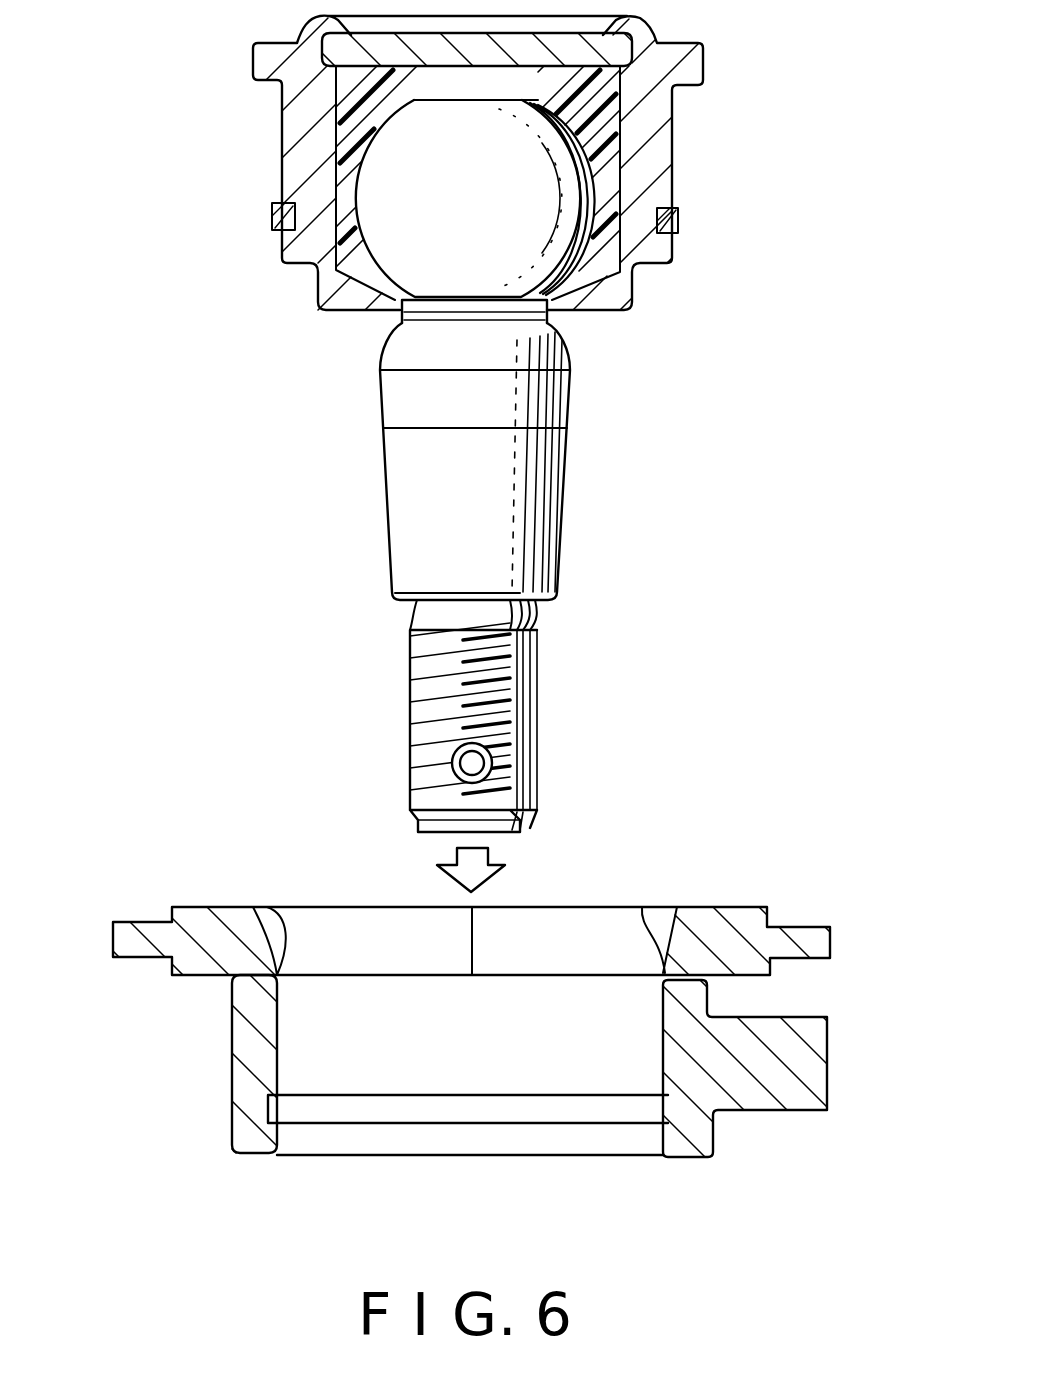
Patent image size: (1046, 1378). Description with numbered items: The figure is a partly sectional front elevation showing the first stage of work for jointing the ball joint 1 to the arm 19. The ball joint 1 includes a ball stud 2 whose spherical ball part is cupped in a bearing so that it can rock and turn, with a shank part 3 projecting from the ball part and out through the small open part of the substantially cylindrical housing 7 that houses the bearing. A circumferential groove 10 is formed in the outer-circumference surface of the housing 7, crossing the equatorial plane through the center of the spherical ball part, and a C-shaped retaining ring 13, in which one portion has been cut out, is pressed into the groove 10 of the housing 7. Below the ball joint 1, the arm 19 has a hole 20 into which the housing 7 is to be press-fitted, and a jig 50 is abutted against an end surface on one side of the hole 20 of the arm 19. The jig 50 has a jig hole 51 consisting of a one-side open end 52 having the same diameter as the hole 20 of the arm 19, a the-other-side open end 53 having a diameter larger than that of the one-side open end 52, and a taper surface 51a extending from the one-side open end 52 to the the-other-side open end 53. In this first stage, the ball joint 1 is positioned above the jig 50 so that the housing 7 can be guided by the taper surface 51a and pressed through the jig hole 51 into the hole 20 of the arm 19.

The ball joint 1 is at (543, 466).
The ball stud 2 is at (560, 550).
The shank part 3 is at (540, 705).
The housing 7 is at (673, 140).
The circumferential groove 10 is at (680, 227).
The retaining ring 13 is at (679, 214).
The arm 19 is at (462, 1075).
The hole 20 is at (283, 1012).
The jig 50 is at (471, 942).
The jig hole 51 is at (290, 907).
The taper surface 51a is at (645, 907).
The one-side open end 52 is at (357, 963).
The the-other-side open end 53 is at (355, 912).